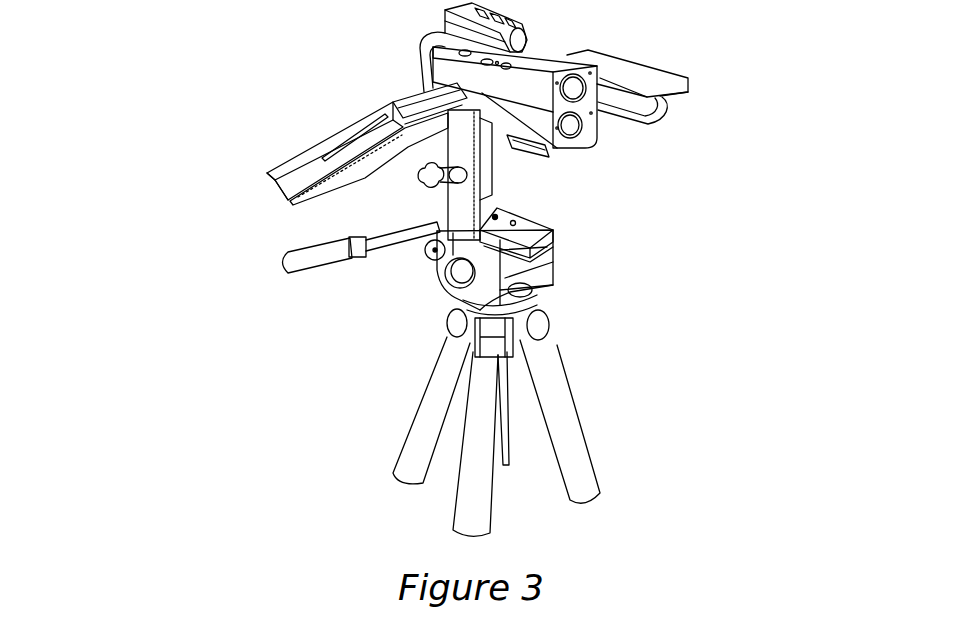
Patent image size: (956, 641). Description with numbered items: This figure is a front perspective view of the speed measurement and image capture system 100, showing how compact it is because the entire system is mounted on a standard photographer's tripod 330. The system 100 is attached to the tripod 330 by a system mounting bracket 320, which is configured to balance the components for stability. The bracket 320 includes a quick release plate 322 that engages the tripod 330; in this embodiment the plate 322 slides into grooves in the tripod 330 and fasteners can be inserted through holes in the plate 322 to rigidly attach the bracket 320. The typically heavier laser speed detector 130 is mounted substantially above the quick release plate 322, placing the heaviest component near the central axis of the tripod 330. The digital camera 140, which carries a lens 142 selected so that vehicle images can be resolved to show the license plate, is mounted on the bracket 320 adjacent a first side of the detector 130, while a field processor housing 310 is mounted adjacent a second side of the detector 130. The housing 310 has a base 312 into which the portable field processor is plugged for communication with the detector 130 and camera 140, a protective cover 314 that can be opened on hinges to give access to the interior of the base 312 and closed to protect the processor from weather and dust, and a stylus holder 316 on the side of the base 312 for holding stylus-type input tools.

The speed measurement and image capture system 100 is at (205, 53).
The laser speed detector 130 is at (576, 136).
The digital camera 140 is at (645, 68).
The lens 142 is at (668, 100).
The field processor housing 310 is at (319, 145).
The base 312 is at (300, 200).
The protective cover 314 is at (293, 155).
The stylus holder 316 is at (360, 117).
The system mounting bracket 320 is at (438, 201).
The quick release plate 322 is at (520, 208).
The tripod 330 is at (430, 323).